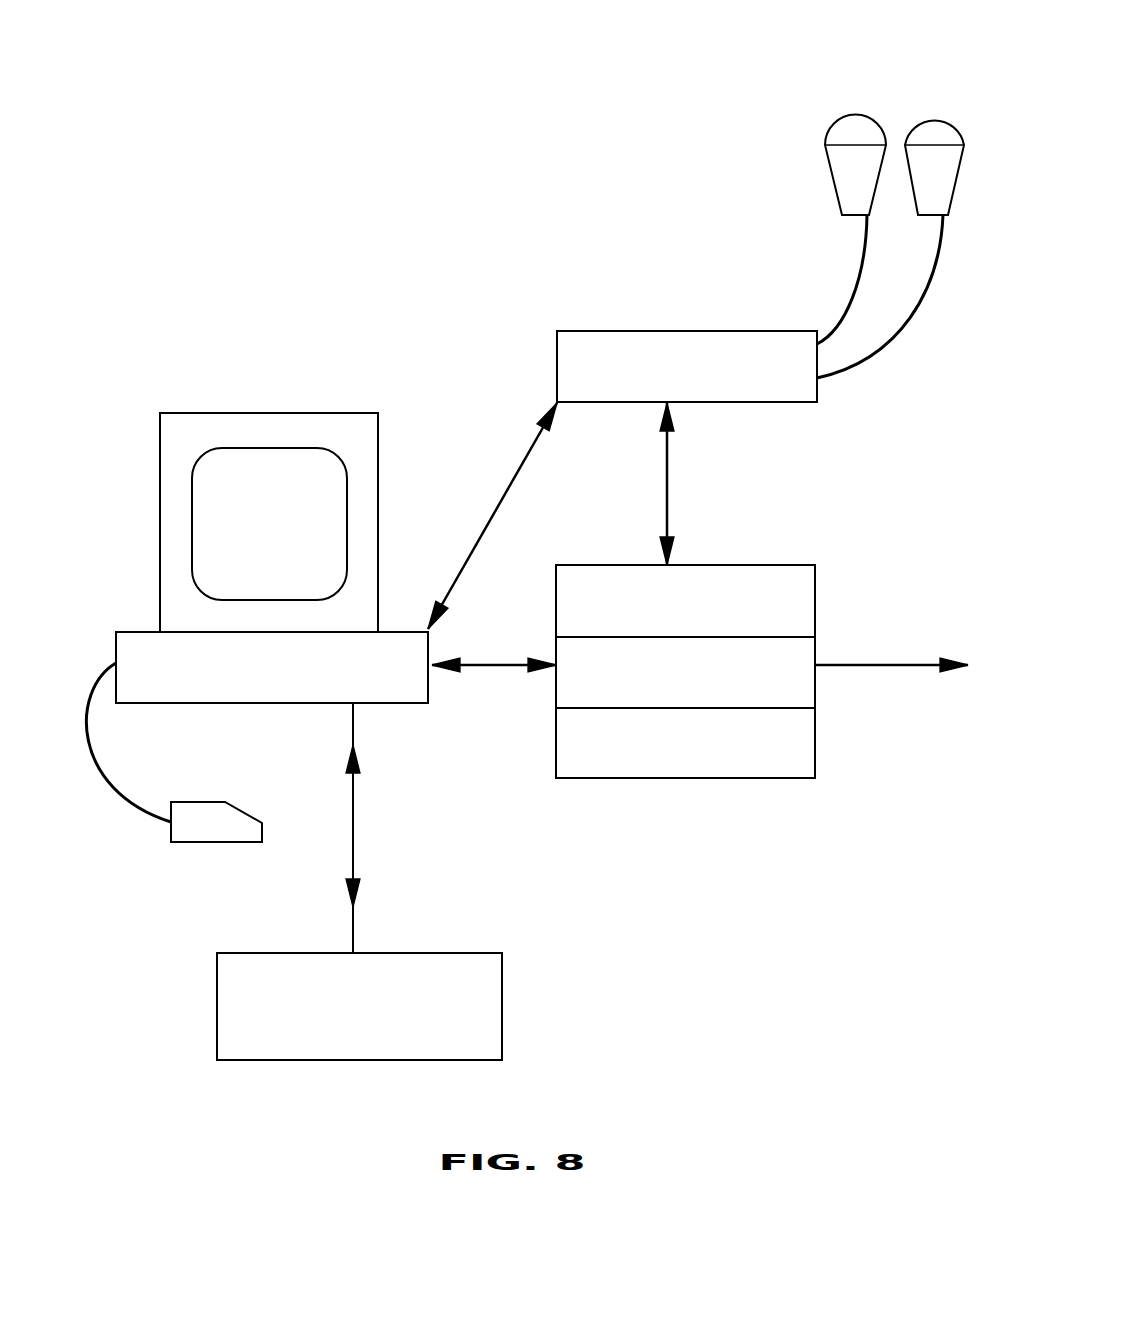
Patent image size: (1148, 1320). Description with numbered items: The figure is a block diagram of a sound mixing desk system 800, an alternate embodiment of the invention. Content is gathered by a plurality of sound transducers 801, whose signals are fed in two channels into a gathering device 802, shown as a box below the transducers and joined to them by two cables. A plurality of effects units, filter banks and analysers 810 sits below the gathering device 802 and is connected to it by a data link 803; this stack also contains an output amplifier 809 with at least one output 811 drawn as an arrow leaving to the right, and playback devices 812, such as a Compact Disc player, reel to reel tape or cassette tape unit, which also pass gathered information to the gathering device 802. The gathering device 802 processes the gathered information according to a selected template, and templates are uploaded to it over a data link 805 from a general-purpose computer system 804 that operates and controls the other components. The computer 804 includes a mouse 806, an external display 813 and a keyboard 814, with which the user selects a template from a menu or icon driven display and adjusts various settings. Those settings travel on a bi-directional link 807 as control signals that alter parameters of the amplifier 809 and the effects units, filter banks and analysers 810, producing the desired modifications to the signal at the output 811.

The sound mixing desk system 800 is at (654, 80).
The sound transducers 801 is at (917, 117).
The gathering device 802 is at (638, 331).
The data link 803 is at (667, 478).
The general-purpose computer system 804 is at (163, 705).
The data link 805 is at (493, 515).
The mouse 806 is at (185, 843).
The bi-directional link 807 is at (483, 667).
The output amplifier 809 is at (740, 692).
The effects units, filter banks and analysers 810 is at (815, 595).
The output 811 is at (886, 670).
The playback devices 812 is at (583, 778).
The external display 813 is at (190, 487).
The keyboard 814 is at (288, 953).